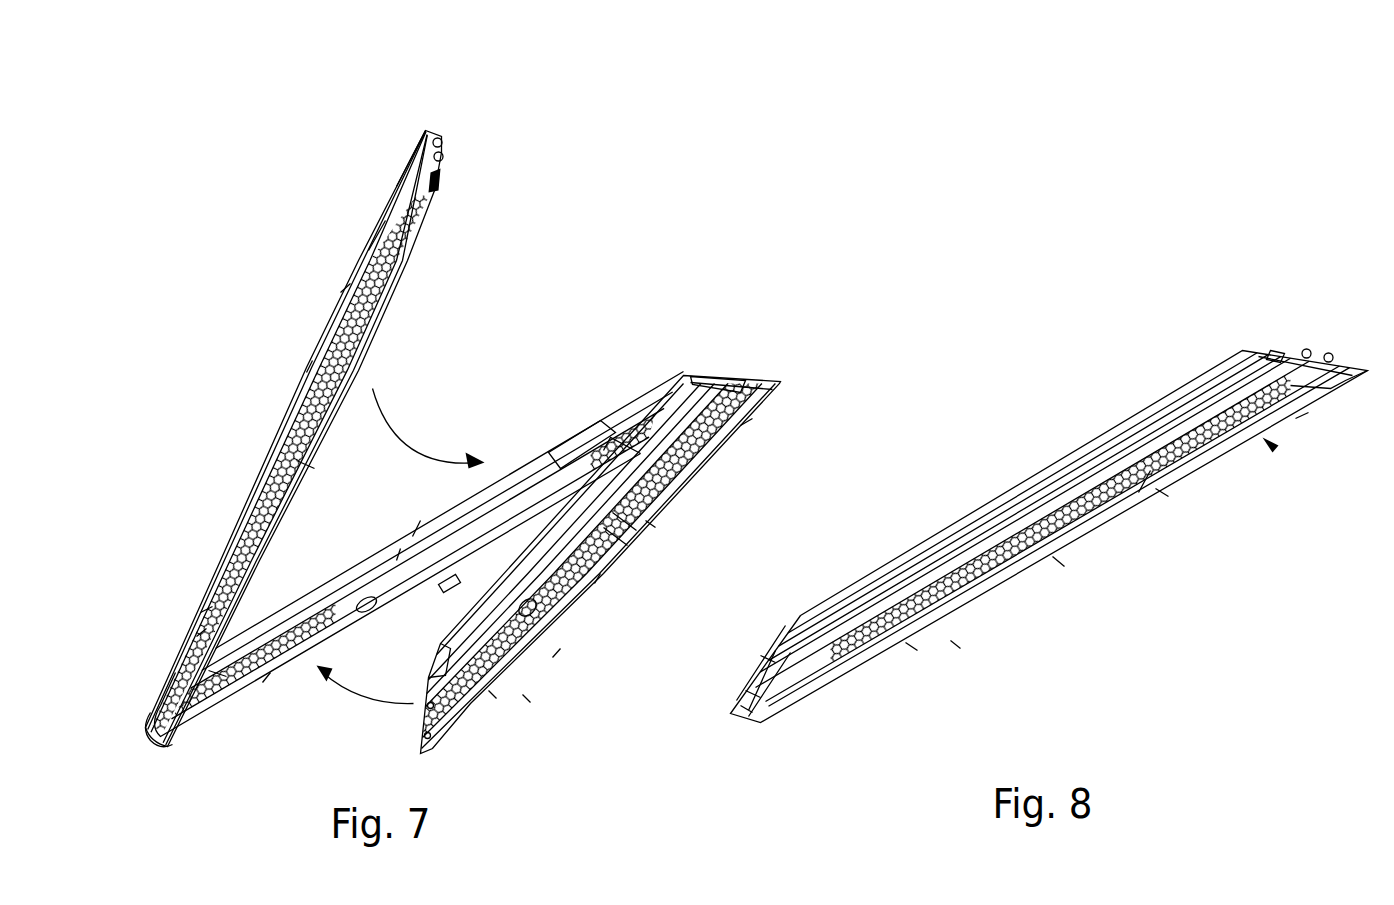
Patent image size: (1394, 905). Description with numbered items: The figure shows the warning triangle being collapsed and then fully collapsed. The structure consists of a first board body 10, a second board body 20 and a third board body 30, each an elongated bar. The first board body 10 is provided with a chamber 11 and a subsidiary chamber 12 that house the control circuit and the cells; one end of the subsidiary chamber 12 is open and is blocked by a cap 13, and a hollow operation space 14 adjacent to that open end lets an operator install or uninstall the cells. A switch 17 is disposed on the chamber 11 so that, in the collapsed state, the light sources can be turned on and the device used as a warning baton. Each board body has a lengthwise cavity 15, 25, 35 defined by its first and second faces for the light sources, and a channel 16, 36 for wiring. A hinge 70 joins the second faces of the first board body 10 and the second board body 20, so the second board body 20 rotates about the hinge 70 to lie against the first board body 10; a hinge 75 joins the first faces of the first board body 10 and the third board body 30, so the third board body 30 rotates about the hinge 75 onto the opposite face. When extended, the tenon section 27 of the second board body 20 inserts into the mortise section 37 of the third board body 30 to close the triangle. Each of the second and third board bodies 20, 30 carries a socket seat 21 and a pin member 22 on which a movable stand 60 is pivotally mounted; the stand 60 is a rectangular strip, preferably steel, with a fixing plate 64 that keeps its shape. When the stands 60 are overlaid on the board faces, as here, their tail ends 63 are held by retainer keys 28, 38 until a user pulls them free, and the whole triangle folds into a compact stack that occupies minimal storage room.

In FIG. 7, the first board body 10 is at (598, 410).
In FIG. 8, the first board body 10 is at (1147, 410).
In FIG. 7, the chamber 11 is at (365, 685).
In FIG. 7, the subsidiary chamber 12 is at (445, 585).
In FIG. 7, the cap 13 is at (542, 457).
In FIG. 7, the hollow operation space 14 is at (562, 447).
In FIG. 7, the cavity 15 is at (418, 523).
In FIG. 7, the channel 16 is at (400, 548).
In FIG. 7, the switch 17 is at (376, 607).
In FIG. 7, the second board body 20 is at (432, 243).
In FIG. 8, the second board body 20 is at (1022, 475).
In FIG. 7, the socket seat 21 is at (747, 427).
In FIG. 8, the socket seat 21 is at (1300, 422).
In FIG. 7, the pin member 22 is at (735, 382).
In FIG. 8, the pin member 22 is at (1276, 352).
In FIG. 7, the cavity 25 is at (396, 186).
In FIG. 7, the tenon section 27 is at (440, 134).
In FIG. 8, the tenon section 27 is at (1306, 352).
In FIG. 7, the retainer key 28 is at (368, 248).
In FIG. 7, the third board body 30 is at (700, 490).
In FIG. 8, the third board body 30 is at (1290, 470).
In FIG. 7, the cavity 35 is at (567, 608).
In FIG. 7, the channel 36 is at (490, 696).
In FIG. 7, the mortise section 37 is at (418, 732).
In FIG. 7, the retainer key 38 is at (525, 698).
In FIG. 8, the retainer key 38 is at (912, 648).
In FIG. 7, the stand 60 is at (308, 366).
In FIG. 8, the stand 60 is at (1058, 562).
In FIG. 7, the tail end 63 is at (345, 287).
In FIG. 8, the tail end 63 is at (955, 645).
In FIG. 7, the fixing plate 64 is at (655, 527).
In FIG. 8, the fixing plate 64 is at (1162, 493).
In FIG. 7, the hinge 70 is at (212, 704).
In FIG. 8, the hinge 70 is at (772, 658).
In FIG. 8, the hinge 75 is at (1330, 403).